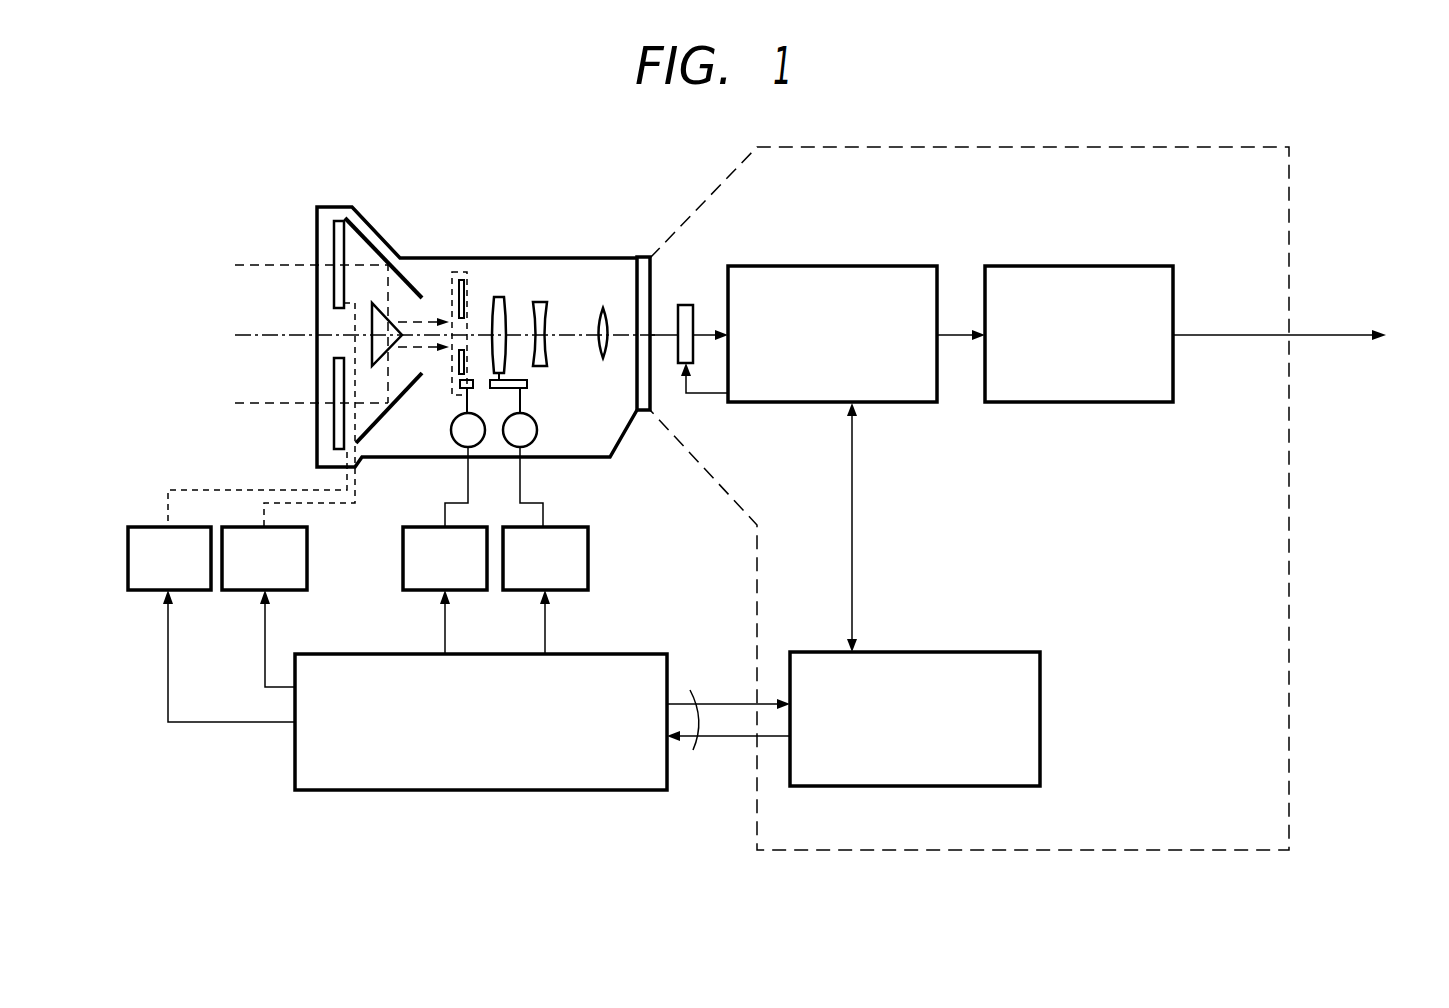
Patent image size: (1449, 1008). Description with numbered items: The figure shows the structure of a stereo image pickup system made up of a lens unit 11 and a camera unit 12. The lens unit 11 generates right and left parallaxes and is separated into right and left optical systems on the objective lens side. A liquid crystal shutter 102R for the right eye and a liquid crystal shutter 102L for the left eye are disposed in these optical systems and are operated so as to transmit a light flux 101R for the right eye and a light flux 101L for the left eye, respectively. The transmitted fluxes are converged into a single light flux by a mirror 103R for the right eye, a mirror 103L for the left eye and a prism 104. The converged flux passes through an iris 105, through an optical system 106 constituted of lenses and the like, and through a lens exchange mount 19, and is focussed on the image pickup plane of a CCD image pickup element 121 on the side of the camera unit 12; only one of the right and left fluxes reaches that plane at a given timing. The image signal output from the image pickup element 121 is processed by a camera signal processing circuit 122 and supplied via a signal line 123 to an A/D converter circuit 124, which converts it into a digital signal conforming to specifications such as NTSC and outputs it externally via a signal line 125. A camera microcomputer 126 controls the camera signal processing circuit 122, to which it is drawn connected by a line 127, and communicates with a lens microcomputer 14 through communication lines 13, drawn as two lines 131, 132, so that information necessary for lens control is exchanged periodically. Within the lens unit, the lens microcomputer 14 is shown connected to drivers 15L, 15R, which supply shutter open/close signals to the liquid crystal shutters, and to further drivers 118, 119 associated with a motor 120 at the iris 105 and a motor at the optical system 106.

The lens unit 11 is at (596, 243).
The camera unit 12 is at (1210, 147).
The communication lines 13 is at (697, 750).
The lens microcomputer 14 is at (628, 654).
The driver (for left eye) 15L is at (192, 598).
The driver (for right eye) 15R is at (288, 598).
The lens exchange mount 19 is at (627, 426).
The light flux (for right eye) 101R is at (243, 266).
The light flux (for left eye) 101L is at (265, 403).
The liquid crystal shutter (for right eye) 102R is at (334, 240).
The liquid crystal shutter (for left eye) 102L is at (334, 430).
The mirror (for right eye) 103R is at (374, 243).
The mirror (for left eye) 103L is at (370, 437).
The prism 104 is at (372, 321).
The iris 105 is at (460, 272).
The optical system 106 is at (499, 297).
The driver 118 is at (468, 596).
The driver 119 is at (568, 596).
The motor 120 is at (451, 426).
The CCD (image pickup element) 121 is at (537, 426).
The camera signal processing circuit 122 is at (890, 266).
The signal line 123 is at (952, 333).
The A/D converter circuit 124 is at (1140, 266).
The signal line 125 is at (1226, 333).
The camera microcomputer 126 is at (1003, 652).
The bidirectional signal line 127 is at (853, 490).
The communication line 131 is at (717, 736).
The communication line 132 is at (732, 704).